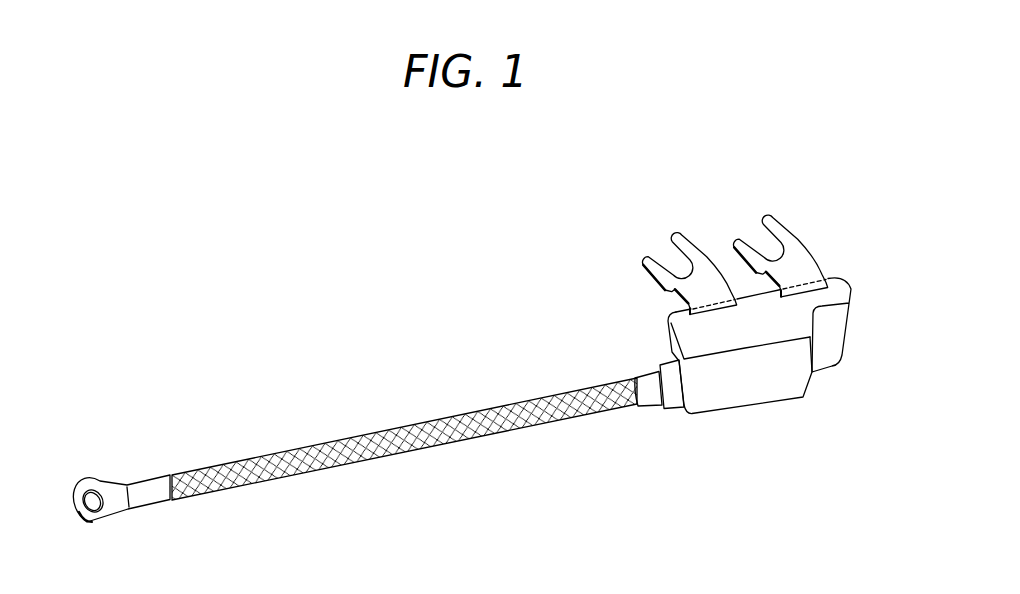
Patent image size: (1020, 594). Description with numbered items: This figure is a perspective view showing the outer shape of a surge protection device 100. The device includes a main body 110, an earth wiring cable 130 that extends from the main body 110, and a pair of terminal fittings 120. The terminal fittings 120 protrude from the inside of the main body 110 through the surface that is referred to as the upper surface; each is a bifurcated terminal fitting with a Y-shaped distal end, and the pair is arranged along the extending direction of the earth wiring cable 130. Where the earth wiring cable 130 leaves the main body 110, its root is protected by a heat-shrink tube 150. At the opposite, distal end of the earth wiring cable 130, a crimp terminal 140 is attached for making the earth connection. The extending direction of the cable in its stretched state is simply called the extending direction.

The surge protection device 100 is at (462, 361).
The main body 110 is at (743, 445).
The terminal fittings 120 is at (764, 212).
The earth wiring cable 130 is at (423, 480).
The crimp terminal 140 is at (140, 539).
The heat-shrink tube 150 is at (643, 440).